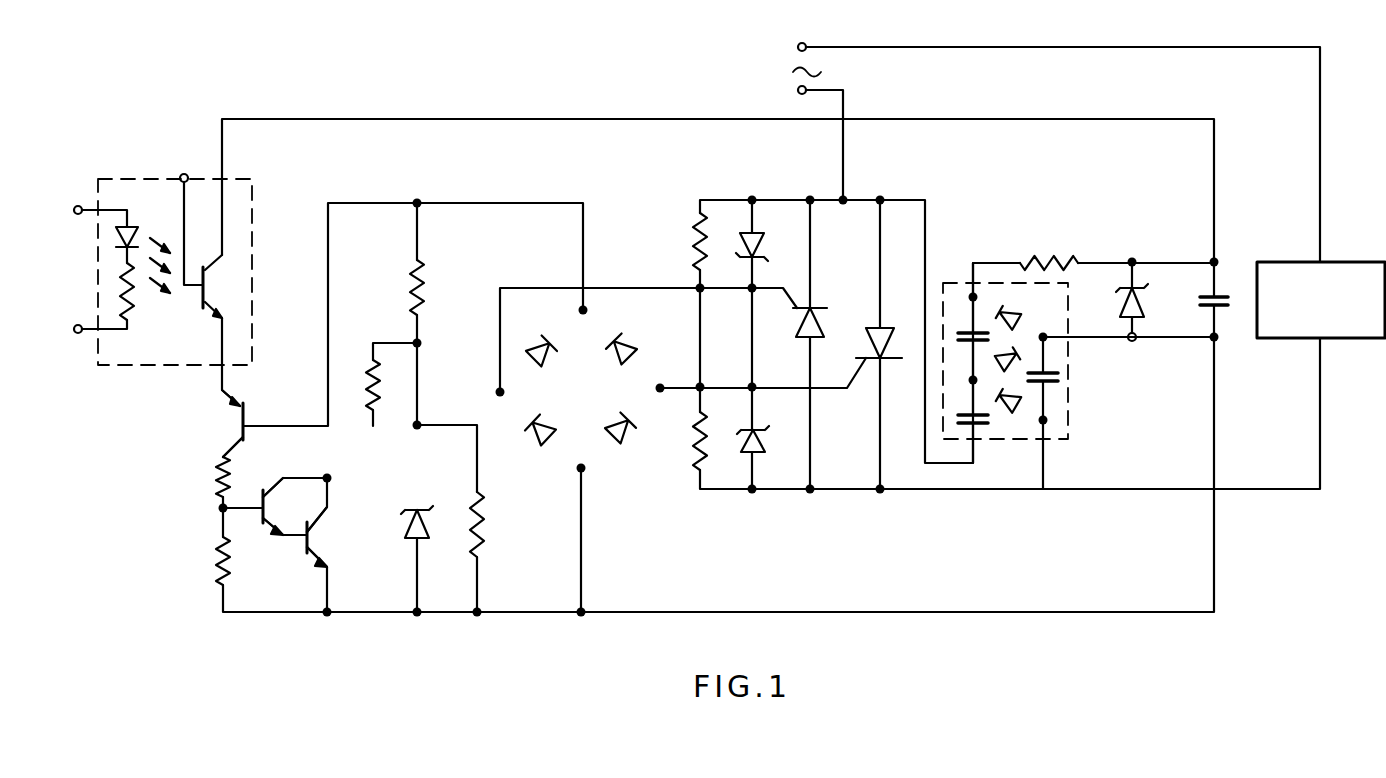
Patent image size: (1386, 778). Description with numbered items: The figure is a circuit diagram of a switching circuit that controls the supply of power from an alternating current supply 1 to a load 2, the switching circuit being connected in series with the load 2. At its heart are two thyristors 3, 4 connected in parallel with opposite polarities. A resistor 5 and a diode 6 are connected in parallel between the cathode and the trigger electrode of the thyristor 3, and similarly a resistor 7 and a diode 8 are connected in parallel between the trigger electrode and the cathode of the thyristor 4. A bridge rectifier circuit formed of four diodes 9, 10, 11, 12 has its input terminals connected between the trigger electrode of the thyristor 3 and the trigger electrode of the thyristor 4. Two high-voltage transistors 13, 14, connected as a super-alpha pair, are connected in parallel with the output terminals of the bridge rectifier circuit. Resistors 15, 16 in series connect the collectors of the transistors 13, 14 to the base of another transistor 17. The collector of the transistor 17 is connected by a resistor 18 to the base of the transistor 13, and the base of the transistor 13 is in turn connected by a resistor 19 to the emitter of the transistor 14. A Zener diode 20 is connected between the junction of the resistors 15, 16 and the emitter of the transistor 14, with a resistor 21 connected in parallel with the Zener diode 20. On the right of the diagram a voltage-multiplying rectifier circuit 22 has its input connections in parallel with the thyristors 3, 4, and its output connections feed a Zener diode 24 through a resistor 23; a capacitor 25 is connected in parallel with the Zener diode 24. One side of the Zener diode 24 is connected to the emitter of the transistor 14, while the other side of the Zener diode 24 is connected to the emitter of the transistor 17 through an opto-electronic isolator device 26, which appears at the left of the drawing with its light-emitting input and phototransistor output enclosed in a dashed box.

The alternating current supply 1 is at (791, 59).
The load 2 is at (1270, 262).
The thyristor 3 is at (793, 327).
The thyristor 4 is at (893, 337).
The resistor 5 is at (690, 256).
The diode 6 is at (764, 250).
The resistor 7 is at (692, 453).
The diode 8 is at (766, 450).
The diode 9 is at (619, 434).
The diode 10 is at (650, 345).
The diode 11 is at (548, 360).
The diode 12 is at (540, 443).
The high-voltage transistor 13 is at (289, 506).
The high-voltage transistor 14 is at (320, 545).
The resistor 15 is at (440, 287).
The resistor 16 is at (372, 365).
The transistor 17 is at (249, 404).
The resistor 18 is at (215, 471).
The resistor 19 is at (215, 548).
The Zener diode 20 is at (411, 507).
The resistor 21 is at (487, 537).
The voltage-multiplying rectifier circuit 22 is at (1068, 439).
The resistor 23 is at (1049, 244).
The Zener diode 24 is at (1153, 302).
The capacitor 25 is at (1222, 307).
The opto-electronic isolator device 26 is at (252, 179).